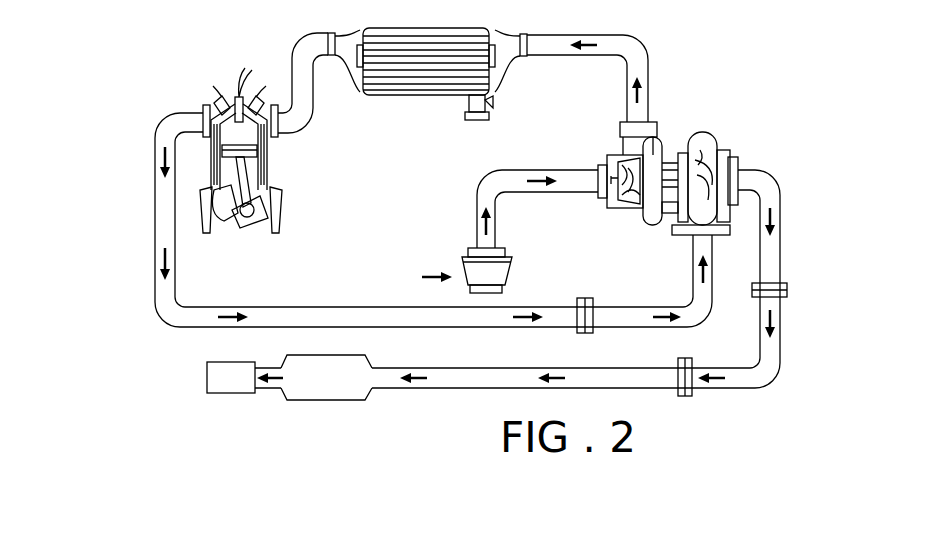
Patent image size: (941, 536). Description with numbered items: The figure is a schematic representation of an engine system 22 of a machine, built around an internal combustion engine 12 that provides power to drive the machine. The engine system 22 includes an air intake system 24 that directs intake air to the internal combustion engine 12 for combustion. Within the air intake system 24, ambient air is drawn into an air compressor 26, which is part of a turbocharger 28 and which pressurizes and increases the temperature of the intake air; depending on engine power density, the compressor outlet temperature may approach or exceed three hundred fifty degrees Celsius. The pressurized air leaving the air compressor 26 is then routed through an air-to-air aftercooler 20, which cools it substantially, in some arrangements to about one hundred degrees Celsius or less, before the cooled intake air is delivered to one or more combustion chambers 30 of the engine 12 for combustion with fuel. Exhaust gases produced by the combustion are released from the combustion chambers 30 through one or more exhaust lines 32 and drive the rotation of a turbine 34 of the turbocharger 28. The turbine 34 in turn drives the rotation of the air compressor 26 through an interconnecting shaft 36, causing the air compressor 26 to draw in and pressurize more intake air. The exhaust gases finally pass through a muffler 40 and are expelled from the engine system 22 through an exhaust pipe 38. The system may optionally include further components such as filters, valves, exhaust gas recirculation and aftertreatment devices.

The internal combustion engine 12 is at (226, 70).
The air-to-air aftercooler 20 is at (427, 27).
The engine system 22 is at (778, 19).
The air intake system 24 is at (450, 147).
The air compressor 26 is at (648, 152).
The turbocharger 28 is at (660, 240).
The combustion chamber 30 is at (240, 140).
The exhaust line 32 is at (155, 218).
The turbine 34 is at (718, 136).
The interconnecting shaft 36 is at (672, 156).
The exhaust pipe 38 is at (207, 378).
The muffler 40 is at (325, 400).